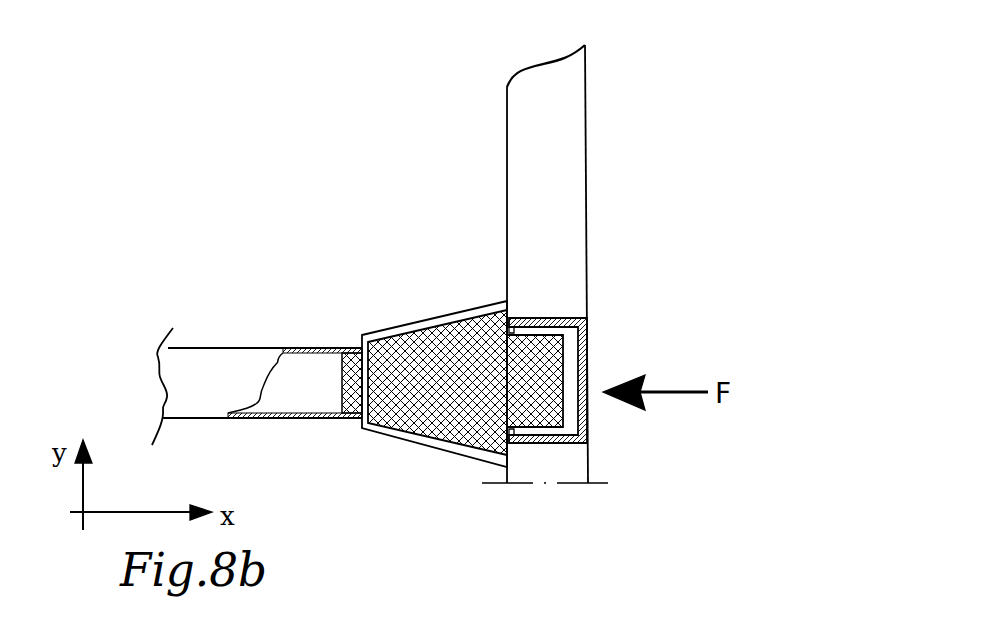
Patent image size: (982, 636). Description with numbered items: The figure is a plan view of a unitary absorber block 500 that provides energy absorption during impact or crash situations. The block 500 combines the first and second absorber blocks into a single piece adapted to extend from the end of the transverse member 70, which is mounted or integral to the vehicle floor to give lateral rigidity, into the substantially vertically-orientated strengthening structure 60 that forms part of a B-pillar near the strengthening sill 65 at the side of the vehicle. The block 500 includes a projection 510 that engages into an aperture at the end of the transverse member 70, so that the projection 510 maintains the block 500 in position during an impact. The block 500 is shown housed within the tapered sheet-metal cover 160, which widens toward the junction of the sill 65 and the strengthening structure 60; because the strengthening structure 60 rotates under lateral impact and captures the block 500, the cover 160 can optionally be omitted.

The strengthening sill 65 is at (545, 218).
The strengthening structure 60 is at (567, 318).
The transverse member 70 is at (233, 363).
The cover 160 is at (440, 316).
The projection 510 is at (342, 382).
The unitary block 500 is at (437, 422).